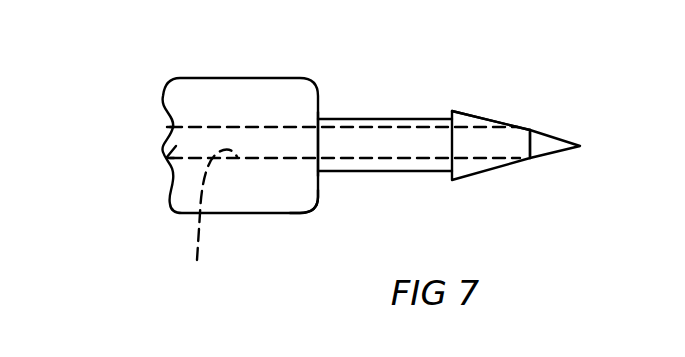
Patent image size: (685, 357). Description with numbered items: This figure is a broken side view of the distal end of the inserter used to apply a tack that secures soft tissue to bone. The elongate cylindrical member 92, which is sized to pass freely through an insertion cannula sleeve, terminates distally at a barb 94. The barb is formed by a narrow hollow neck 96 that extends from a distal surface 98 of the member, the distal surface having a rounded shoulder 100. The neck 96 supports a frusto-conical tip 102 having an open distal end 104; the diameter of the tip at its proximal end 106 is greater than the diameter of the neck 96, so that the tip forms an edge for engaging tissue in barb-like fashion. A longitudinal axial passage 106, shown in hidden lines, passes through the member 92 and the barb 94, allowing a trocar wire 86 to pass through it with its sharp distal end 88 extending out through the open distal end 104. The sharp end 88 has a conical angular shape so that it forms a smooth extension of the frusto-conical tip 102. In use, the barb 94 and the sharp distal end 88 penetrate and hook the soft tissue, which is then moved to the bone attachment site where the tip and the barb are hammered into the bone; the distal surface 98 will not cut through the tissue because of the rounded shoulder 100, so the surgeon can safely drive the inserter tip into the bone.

The trocar wire 86 is at (170, 160).
The sharp distal end 88 is at (567, 140).
The elongate cylindrical member 92 is at (221, 78).
The barb 94 is at (452, 111).
The narrow hollow neck 96 is at (416, 172).
The distal surface 98 is at (320, 105).
The rounded shoulder 100 is at (310, 207).
The frusto-conical tip 102 is at (487, 117).
The open distal end 104 is at (540, 148).
The longitudinal axial passage 106 is at (345, 207).